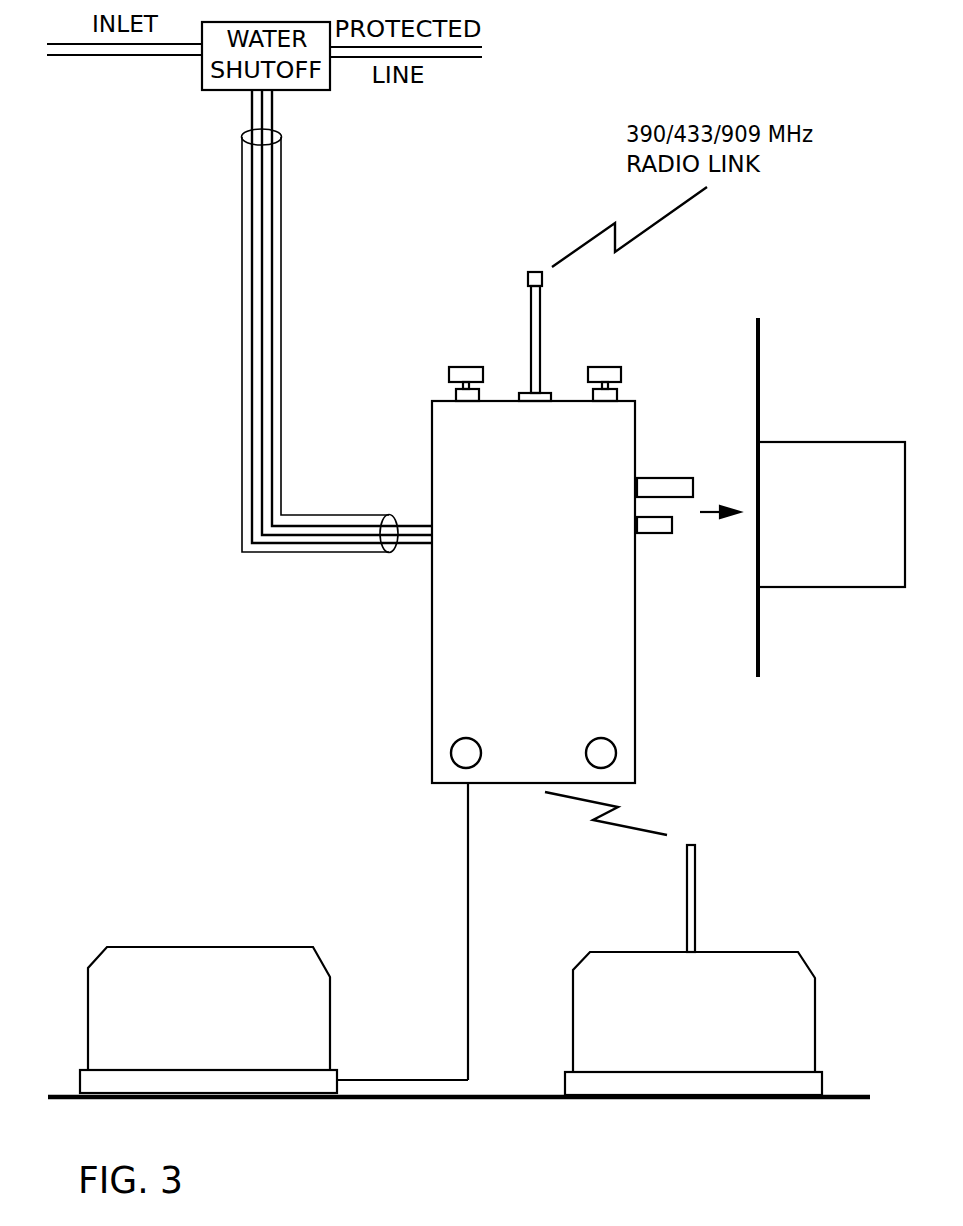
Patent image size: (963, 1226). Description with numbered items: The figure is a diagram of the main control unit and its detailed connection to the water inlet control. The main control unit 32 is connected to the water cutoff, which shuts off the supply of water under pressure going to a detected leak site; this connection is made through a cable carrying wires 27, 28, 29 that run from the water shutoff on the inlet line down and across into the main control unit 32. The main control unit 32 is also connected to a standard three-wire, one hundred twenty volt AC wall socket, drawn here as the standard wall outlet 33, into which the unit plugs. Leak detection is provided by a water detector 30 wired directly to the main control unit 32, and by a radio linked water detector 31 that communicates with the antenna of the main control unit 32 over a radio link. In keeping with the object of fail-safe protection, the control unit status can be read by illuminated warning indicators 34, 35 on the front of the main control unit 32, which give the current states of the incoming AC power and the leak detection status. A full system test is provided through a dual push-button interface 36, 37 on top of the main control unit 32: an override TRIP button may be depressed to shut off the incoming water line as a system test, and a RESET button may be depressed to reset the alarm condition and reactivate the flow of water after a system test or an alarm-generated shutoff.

The first wire of shutoff control cable 27 is at (255, 208).
The second wire of shutoff control cable 28 is at (263, 257).
The third wire of shutoff control cable 29 is at (270, 312).
The water detector 30 is at (180, 947).
The radio linked water detector 31 is at (732, 950).
The main control unit 32 is at (548, 699).
The standard 120 VAC wall outlet 33 is at (830, 587).
The left connector jack 34 is at (450, 752).
The right connector jack 35 is at (617, 752).
The left push button 36 is at (468, 367).
The right push button 37 is at (603, 368).